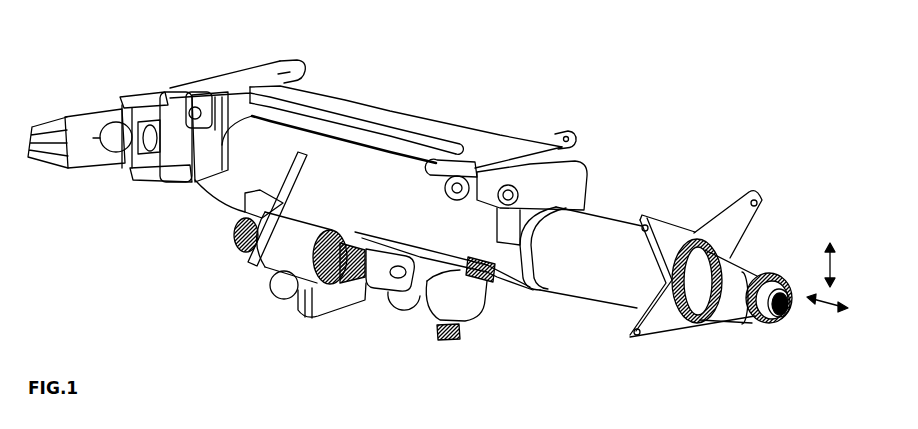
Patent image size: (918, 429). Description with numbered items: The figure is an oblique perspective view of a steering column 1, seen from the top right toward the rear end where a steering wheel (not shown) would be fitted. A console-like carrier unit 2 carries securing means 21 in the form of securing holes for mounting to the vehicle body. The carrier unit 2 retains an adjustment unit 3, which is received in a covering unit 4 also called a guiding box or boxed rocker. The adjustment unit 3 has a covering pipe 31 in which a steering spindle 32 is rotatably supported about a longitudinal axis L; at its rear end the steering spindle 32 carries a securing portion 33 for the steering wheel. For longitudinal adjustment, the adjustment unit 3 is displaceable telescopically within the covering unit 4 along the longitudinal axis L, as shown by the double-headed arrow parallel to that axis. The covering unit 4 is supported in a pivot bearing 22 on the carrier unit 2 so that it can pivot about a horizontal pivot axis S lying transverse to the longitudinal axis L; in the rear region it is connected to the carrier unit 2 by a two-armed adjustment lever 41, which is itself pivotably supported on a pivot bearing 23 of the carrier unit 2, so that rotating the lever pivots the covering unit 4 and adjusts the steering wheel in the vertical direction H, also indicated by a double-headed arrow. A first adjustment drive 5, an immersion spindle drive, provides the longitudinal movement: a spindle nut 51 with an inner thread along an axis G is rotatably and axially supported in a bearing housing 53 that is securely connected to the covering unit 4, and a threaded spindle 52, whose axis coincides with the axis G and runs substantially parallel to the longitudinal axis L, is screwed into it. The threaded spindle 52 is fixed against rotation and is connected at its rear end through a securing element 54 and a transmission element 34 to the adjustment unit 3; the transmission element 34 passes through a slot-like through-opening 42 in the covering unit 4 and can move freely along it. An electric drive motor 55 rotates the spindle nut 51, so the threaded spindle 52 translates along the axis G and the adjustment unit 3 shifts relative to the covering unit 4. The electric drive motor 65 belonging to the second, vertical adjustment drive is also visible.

The steering column 1 is at (477, 67).
The carrier unit 2 is at (389, 122).
The securing means 21 is at (292, 62).
The pivot bearing 22 is at (194, 108).
The pivot bearing 23 is at (470, 170).
The adjustment unit 3 is at (655, 200).
The covering pipe 31 is at (588, 225).
The steering spindle 32 is at (739, 270).
The securing portion 33 is at (755, 323).
The transmission element 34 is at (462, 322).
The covering unit 4 is at (227, 183).
The adjustment lever 41 is at (553, 167).
The through-opening 42 is at (500, 272).
The first adjustment drive 5 is at (263, 305).
The spindle nut 51 is at (318, 285).
The threaded spindle 52 is at (343, 290).
The bearing housing 53 is at (282, 247).
The securing element 54 is at (389, 283).
The electric drive motor 55 is at (367, 293).
The electric drive motor 65 is at (442, 340).
The axis G is at (236, 232).
The vertical direction H is at (826, 265).
The longitudinal axis L is at (834, 316).
The pivot axis S is at (351, 79).